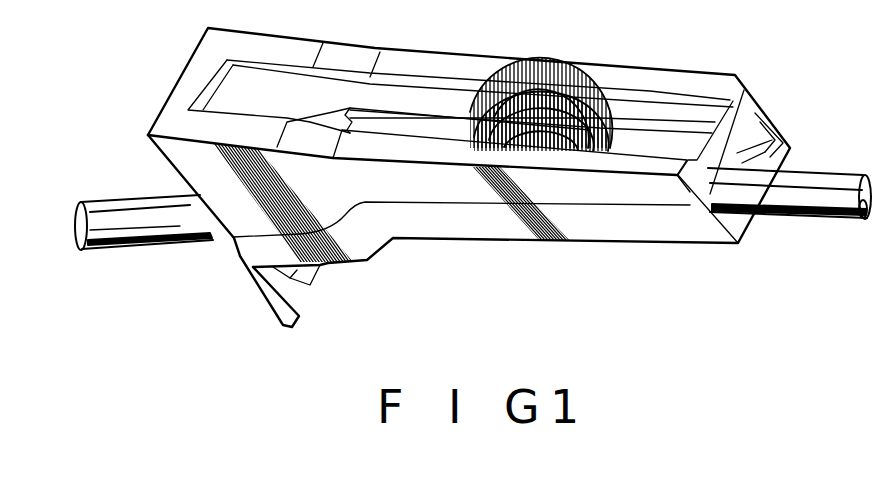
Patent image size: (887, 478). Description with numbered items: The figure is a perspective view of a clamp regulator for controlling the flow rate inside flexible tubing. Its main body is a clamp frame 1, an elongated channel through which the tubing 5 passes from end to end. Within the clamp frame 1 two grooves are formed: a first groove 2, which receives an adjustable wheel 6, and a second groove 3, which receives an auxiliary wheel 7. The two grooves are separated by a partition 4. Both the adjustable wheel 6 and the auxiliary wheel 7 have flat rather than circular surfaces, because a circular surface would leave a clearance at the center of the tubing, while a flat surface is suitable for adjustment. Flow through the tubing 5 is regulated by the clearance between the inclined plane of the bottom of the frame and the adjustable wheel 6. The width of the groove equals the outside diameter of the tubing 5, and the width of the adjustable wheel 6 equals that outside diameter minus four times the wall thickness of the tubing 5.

The clamp frame 1 is at (483, 225).
The first groove 2 is at (733, 245).
The second groove 3 is at (753, 142).
The partition 4 is at (405, 125).
The tubing 5 is at (822, 183).
The adjustable wheel 6 is at (573, 115).
The auxiliary wheel 7 is at (550, 62).